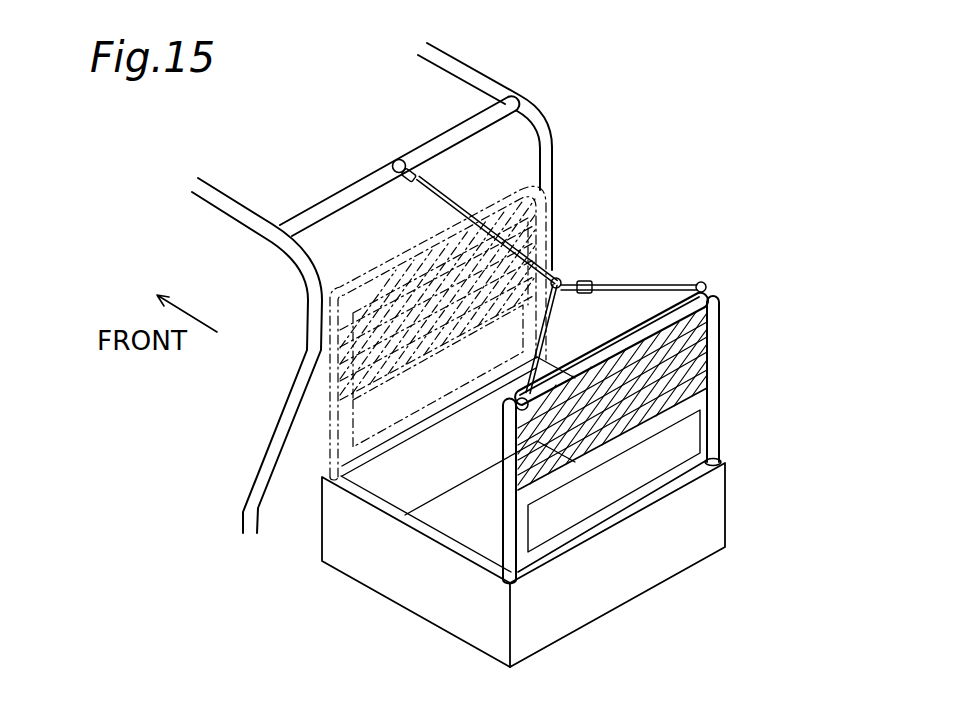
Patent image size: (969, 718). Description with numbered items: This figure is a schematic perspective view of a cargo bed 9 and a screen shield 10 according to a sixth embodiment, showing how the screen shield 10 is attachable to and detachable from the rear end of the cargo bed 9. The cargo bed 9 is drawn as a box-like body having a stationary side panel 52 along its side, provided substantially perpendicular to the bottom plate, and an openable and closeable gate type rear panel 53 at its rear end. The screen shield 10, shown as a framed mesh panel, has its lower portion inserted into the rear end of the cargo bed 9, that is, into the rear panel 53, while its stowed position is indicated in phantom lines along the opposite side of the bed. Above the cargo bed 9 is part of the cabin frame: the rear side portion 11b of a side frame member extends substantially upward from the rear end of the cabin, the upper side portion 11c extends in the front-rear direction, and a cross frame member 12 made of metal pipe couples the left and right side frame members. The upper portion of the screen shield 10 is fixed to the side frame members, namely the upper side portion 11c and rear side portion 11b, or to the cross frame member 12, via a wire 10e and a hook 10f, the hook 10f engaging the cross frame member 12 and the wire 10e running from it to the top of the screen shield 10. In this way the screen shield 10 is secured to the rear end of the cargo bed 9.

The cargo bed 9 is at (544, 515).
The screen shield 10 is at (667, 251).
The wire 10e is at (467, 213).
The hook 10f is at (394, 160).
The rear side portion 11b is at (308, 276).
The upper side portion 11c is at (467, 74).
The cross frame member 12 is at (353, 192).
The stationary side panel 52 is at (400, 567).
The rear panel 53 is at (663, 547).